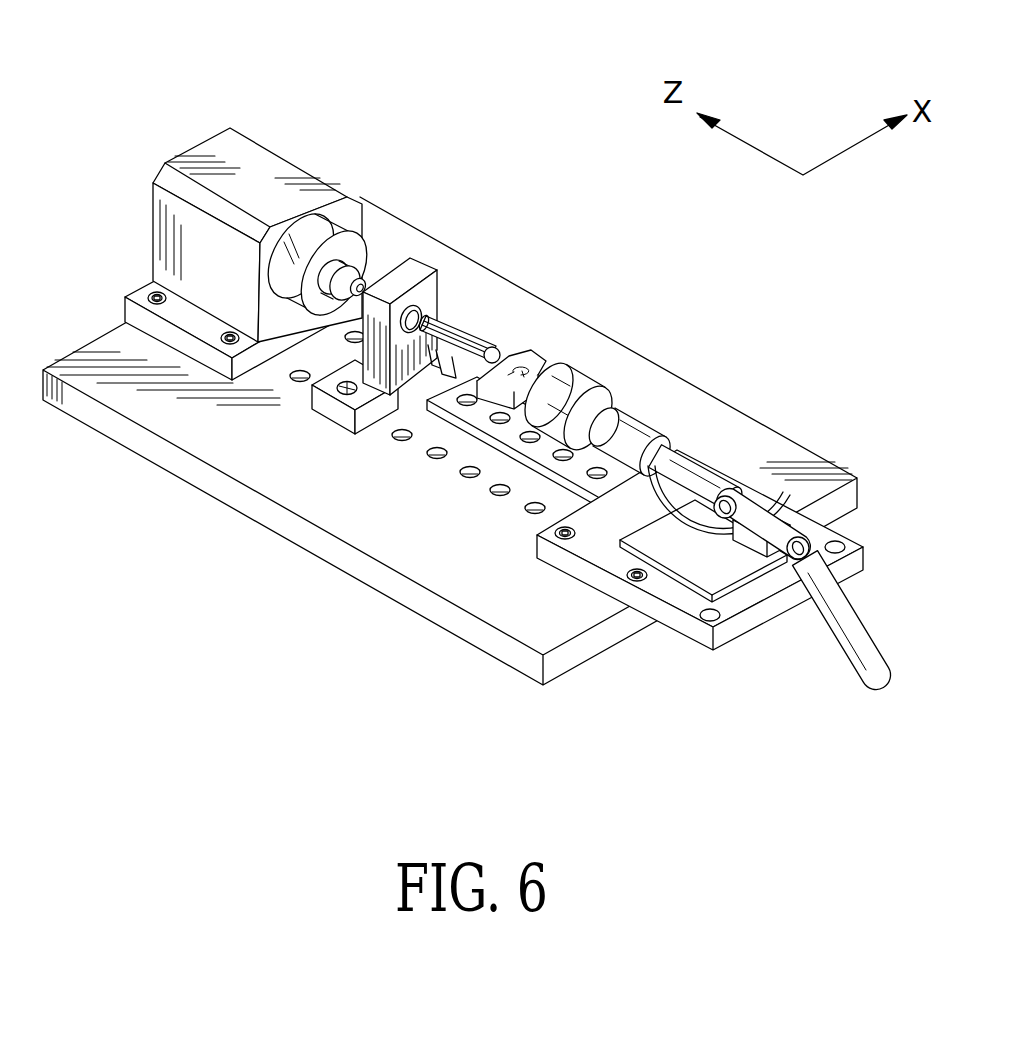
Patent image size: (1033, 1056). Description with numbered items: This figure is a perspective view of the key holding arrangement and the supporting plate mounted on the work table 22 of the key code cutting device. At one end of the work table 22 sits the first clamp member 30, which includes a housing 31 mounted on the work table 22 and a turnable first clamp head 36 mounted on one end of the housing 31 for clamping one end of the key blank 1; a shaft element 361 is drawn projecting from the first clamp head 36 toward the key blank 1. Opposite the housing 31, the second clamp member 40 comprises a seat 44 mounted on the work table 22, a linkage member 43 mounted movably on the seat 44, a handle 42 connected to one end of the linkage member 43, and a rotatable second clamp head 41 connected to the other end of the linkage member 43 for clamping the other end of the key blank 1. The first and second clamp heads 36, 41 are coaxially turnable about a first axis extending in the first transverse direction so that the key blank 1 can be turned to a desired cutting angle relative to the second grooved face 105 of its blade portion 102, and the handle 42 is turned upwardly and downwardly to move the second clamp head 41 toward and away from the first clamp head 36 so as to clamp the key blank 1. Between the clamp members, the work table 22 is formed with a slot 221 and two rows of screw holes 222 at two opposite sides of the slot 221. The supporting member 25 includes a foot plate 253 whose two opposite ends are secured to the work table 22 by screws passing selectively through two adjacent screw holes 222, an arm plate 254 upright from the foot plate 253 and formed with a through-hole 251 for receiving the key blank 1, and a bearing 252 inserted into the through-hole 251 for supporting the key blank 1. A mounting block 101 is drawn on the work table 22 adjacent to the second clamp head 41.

The key blank 1 is at (469, 416).
The mounting block 101 is at (547, 366).
The blade portion 102 is at (428, 372).
The second grooved face 105 is at (447, 352).
The work table 22 is at (677, 393).
The slot 221 is at (520, 475).
The screw holes 222 is at (437, 460).
The supporting member 25 is at (468, 279).
The through-hole 251 is at (421, 317).
The bearing 252 is at (440, 317).
The foot plate 253 is at (330, 407).
The arm plate 254 is at (320, 372).
The first clamp member 30 is at (291, 268).
The housing 31 is at (262, 132).
The first clamp head 36 is at (332, 264).
The motor shaft 361 is at (362, 284).
The second clamp member 40 is at (706, 517).
The second clamp head 41 is at (640, 357).
The handle 42 is at (849, 634).
The linkage member 43 is at (784, 500).
The seat 44 is at (660, 632).